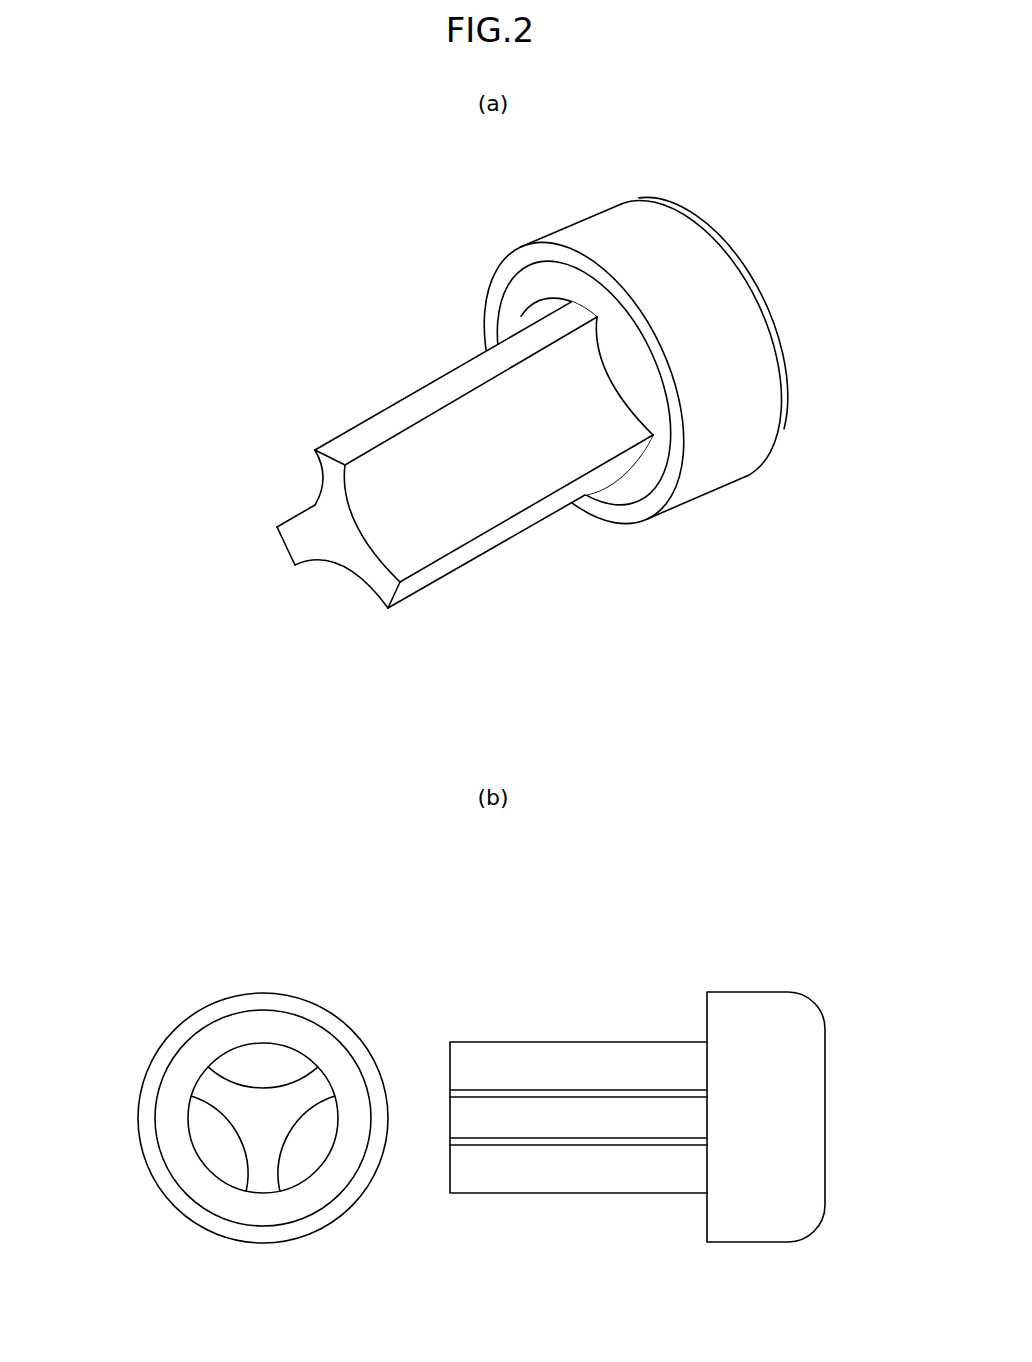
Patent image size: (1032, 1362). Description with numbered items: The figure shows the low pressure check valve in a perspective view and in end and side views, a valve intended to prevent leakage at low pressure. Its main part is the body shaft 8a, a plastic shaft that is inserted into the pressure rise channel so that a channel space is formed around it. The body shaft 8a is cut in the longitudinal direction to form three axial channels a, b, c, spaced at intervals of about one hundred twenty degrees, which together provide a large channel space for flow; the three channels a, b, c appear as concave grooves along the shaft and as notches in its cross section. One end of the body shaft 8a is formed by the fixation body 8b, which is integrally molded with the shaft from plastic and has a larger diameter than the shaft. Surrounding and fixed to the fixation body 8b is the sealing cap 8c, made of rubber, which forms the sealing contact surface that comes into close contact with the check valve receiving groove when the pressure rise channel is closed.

The body shaft 8a is at (531, 518).
The fixation body 8b is at (643, 483).
The sealing cap 8c is at (737, 443).
The axial channel a is at (433, 520).
The axial channel b is at (320, 488).
The axial channel c is at (340, 563).